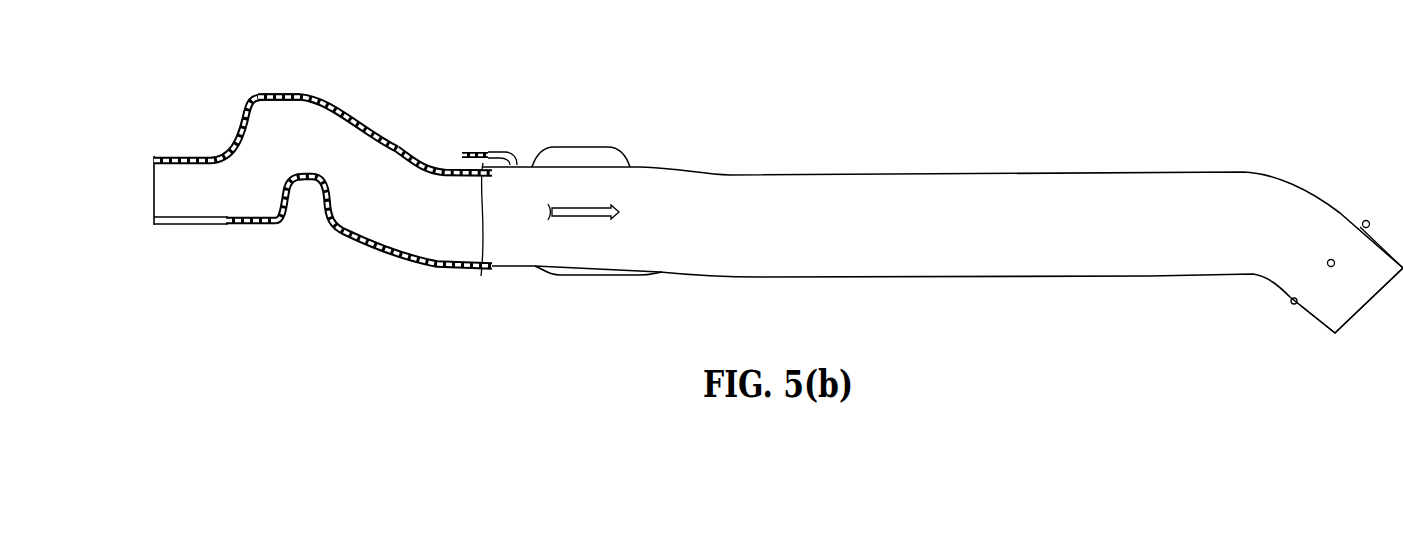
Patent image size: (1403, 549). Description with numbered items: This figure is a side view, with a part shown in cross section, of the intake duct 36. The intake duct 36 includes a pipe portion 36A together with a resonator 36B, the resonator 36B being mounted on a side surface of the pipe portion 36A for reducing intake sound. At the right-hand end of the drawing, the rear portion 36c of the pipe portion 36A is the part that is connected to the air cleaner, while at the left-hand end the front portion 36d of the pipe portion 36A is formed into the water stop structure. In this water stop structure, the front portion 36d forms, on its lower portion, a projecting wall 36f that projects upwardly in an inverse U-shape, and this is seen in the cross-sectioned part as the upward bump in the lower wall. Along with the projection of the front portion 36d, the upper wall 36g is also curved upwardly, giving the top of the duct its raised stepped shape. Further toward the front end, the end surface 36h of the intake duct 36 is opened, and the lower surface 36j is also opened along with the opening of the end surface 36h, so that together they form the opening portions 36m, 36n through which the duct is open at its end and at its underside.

The intake duct 36 is at (750, 193).
The pipe portion 36A is at (1020, 170).
The resonator 36B is at (630, 143).
The rear portion 36c is at (1313, 315).
The front portion 36d is at (405, 136).
The upper wall 36g is at (310, 92).
The end surface 36h is at (152, 158).
The lower surface 36j is at (212, 225).
The projecting wall 36f is at (333, 192).
The opening portion 36m is at (150, 202).
The opening portion 36n is at (192, 226).